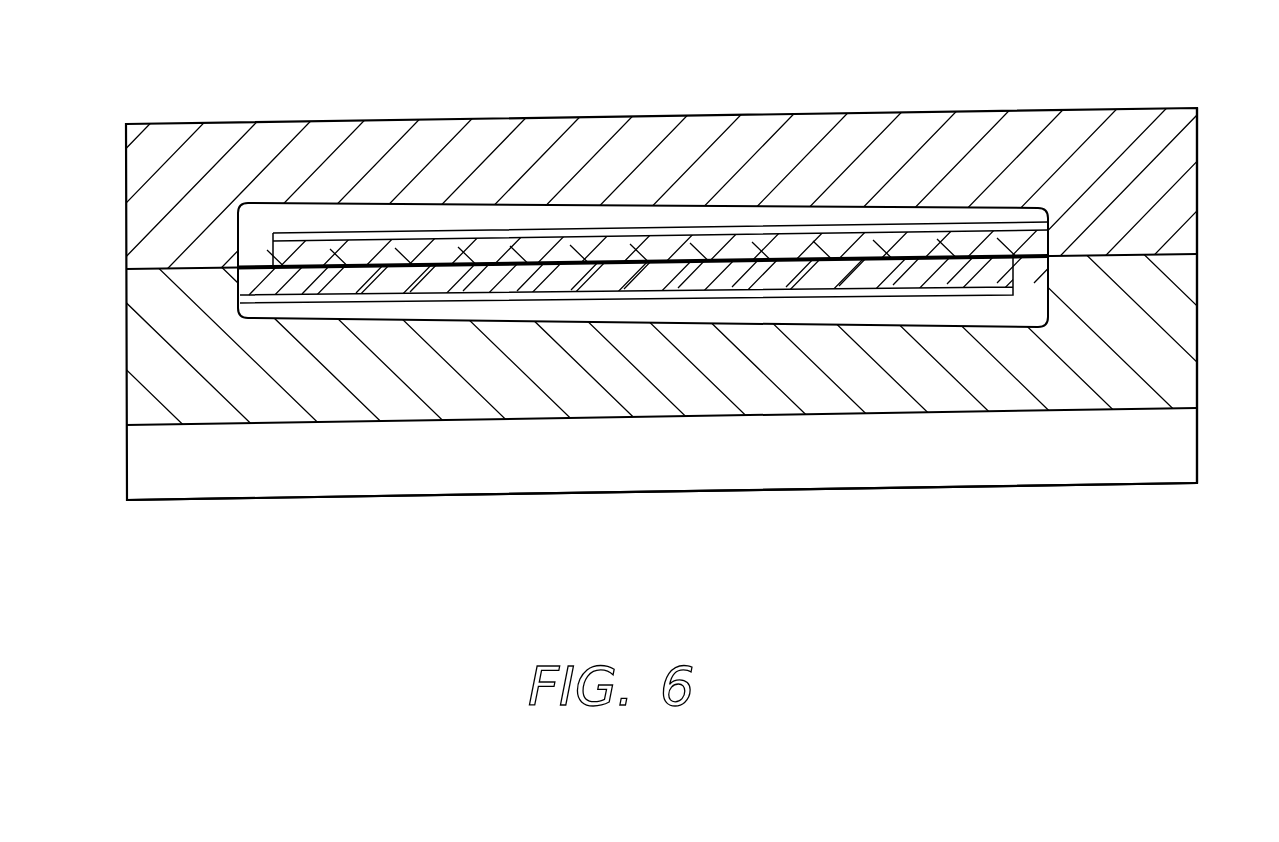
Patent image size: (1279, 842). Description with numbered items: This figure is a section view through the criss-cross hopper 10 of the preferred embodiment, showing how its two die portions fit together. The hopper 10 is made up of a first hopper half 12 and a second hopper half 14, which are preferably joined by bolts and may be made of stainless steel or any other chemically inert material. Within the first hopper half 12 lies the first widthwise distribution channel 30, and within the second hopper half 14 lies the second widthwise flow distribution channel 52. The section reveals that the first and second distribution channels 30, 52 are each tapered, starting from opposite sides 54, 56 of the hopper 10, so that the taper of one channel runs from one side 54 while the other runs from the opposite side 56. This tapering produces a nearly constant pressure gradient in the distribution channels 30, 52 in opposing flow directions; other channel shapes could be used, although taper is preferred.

The criss-cross hopper 10 is at (1138, 49).
The first hopper half 12 is at (131, 413).
The second hopper half 14 is at (127, 212).
The first widthwise distribution channel 30 is at (955, 313).
The second widthwise flow distribution channel 52 is at (502, 213).
The side of the hopper 54 is at (144, 356).
The side of the hopper 56 is at (1199, 337).